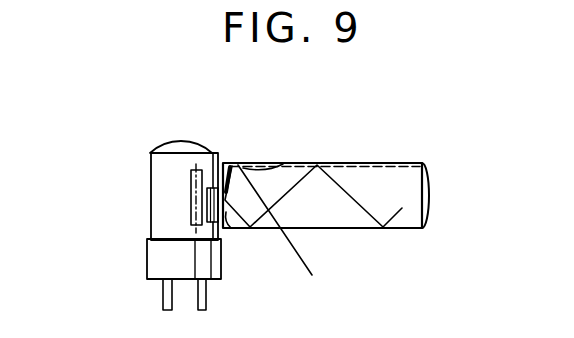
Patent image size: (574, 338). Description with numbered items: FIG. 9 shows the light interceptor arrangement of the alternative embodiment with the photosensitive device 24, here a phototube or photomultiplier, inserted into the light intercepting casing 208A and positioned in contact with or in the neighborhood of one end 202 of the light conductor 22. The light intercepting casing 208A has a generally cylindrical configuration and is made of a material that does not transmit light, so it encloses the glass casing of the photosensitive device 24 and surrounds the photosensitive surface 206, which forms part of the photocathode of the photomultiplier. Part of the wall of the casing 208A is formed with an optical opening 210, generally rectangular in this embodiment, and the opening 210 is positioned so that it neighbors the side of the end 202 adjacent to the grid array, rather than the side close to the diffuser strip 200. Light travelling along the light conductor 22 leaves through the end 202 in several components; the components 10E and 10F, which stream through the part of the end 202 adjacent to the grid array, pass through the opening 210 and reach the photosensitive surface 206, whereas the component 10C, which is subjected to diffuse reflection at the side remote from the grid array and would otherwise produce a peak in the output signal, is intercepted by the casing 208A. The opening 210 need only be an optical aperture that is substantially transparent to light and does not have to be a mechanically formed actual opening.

The photosensitive surface 206 is at (192, 178).
The light intercepting casing 208A is at (147, 232).
The photosensitive device 24 is at (137, 259).
The optical opening 210 is at (220, 186).
The light conductor 22 is at (384, 163).
The diffuser strip 200 is at (402, 168).
The light component 10C is at (232, 165).
The light component 10F is at (283, 164).
The light component 10E is at (228, 229).
The end of light conductor 202 is at (220, 237).